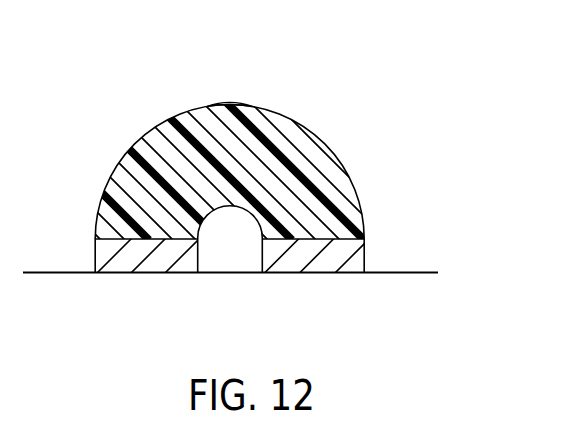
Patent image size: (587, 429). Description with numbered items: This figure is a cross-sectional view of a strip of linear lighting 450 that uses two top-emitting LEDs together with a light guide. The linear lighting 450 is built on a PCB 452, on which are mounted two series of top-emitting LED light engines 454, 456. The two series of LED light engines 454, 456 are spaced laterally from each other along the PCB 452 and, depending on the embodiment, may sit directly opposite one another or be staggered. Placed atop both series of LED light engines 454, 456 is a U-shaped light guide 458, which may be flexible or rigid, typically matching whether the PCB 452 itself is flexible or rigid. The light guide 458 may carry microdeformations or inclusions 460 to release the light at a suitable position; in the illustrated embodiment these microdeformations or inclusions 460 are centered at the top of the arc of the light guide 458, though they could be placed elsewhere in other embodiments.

The linear lighting 450 is at (206, 174).
The PCB 452 is at (398, 272).
The top-emitting LED light engine 454 is at (322, 267).
The top-emitting LED light engine 456 is at (123, 267).
The U-shaped light guide 458 is at (160, 131).
The microdeformations or inclusions 460 is at (247, 100).